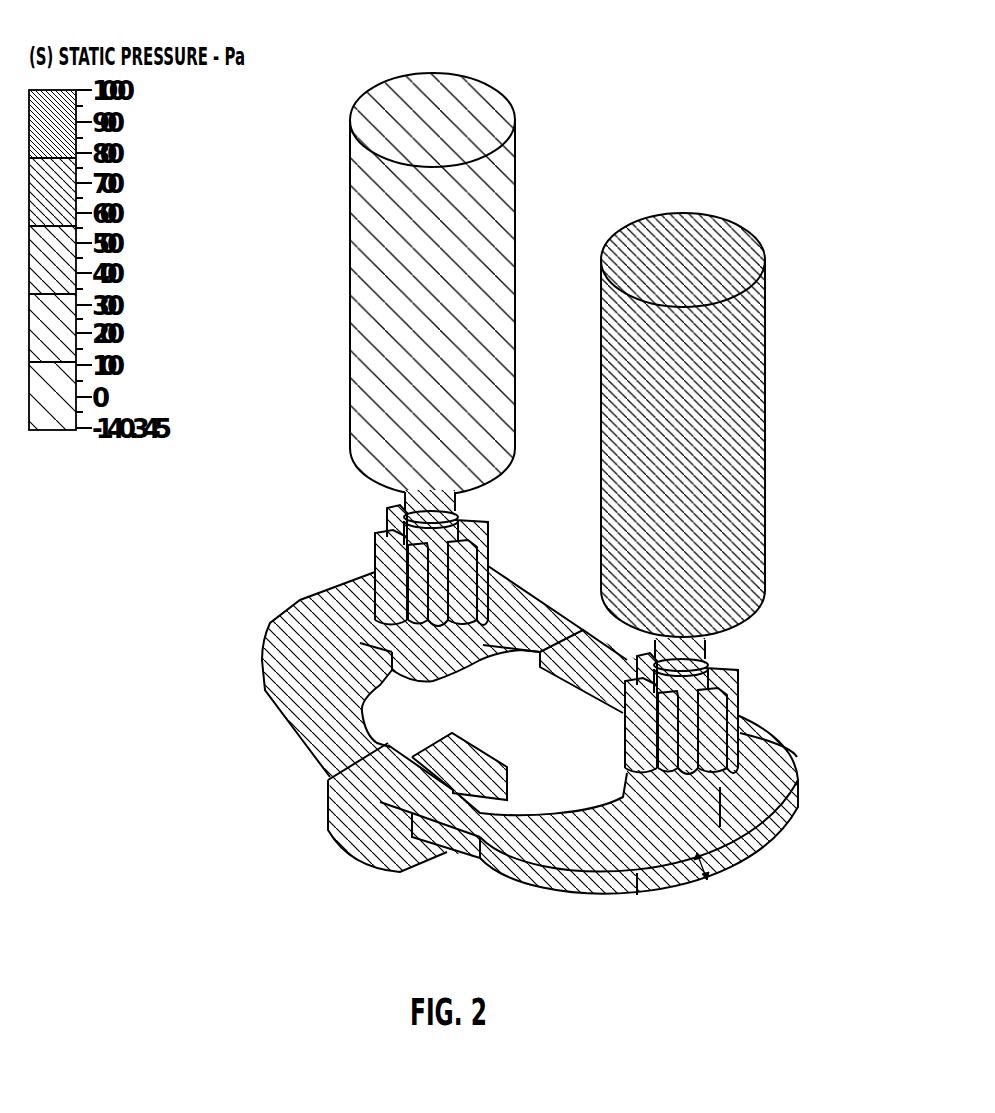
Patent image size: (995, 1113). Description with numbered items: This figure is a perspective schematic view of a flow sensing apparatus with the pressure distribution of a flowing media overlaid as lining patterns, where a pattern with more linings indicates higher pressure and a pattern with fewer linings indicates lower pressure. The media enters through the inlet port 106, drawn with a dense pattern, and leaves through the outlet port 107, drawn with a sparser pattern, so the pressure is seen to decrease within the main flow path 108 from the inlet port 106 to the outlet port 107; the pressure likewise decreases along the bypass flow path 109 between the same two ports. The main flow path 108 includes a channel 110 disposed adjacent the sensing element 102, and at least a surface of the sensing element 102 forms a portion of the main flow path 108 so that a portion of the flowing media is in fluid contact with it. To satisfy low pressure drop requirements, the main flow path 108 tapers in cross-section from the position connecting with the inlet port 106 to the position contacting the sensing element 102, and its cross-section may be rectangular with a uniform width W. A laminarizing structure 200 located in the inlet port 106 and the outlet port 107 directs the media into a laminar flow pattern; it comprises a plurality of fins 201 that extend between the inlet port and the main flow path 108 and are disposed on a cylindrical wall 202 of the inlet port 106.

The sensing element 102 is at (450, 767).
The inlet port 106 is at (762, 643).
The outlet port 107 is at (349, 497).
The main flow path 108 is at (633, 870).
The bypass flow path 109 is at (565, 622).
The channel 110 is at (335, 833).
The laminarizing structure 200 is at (763, 710).
The fins 201 is at (800, 765).
The cylindrical wall 202 is at (725, 857).
The width W is at (710, 872).